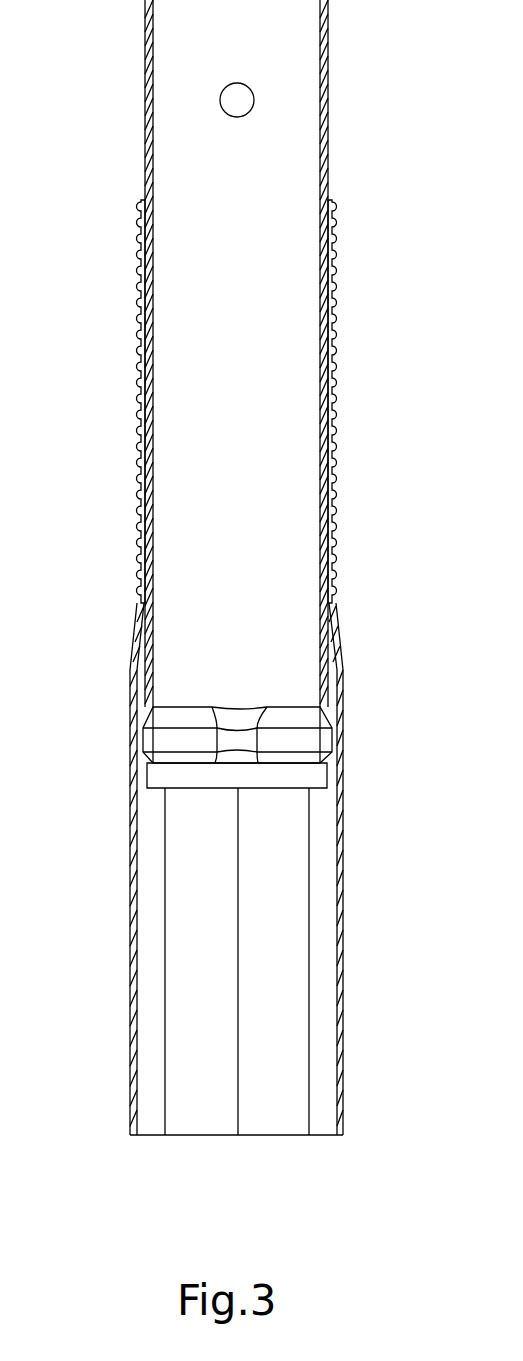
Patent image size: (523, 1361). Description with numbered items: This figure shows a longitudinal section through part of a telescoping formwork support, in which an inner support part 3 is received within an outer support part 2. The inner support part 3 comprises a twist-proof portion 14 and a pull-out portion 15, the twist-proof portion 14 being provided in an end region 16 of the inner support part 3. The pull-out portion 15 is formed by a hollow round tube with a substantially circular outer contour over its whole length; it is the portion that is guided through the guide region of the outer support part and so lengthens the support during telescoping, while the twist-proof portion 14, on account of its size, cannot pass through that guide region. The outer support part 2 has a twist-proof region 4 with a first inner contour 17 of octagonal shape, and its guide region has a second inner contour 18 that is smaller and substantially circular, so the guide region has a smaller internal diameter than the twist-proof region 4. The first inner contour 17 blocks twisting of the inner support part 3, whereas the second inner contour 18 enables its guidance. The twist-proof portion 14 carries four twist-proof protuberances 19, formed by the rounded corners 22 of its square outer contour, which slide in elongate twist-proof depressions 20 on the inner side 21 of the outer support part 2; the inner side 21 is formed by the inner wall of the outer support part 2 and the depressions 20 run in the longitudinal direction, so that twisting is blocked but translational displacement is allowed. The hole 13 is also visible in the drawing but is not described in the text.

The outer support part 2 is at (342, 900).
The inner support part 3 is at (325, 82).
The twist-proof region 4 is at (171, 912).
The opening 13 is at (206, 98).
The twist-proof portion 14 is at (316, 743).
The pull-out portion 15 is at (305, 336).
The end region 16 is at (166, 760).
The first inner contour 17 is at (181, 1057).
The second inner contour 18 is at (126, 339).
The twist-proof protuberances 19 is at (180, 733).
The twist-proof depressions 20 is at (309, 1077).
The inner side 21 is at (279, 1118).
The rounded corners 22 is at (292, 740).